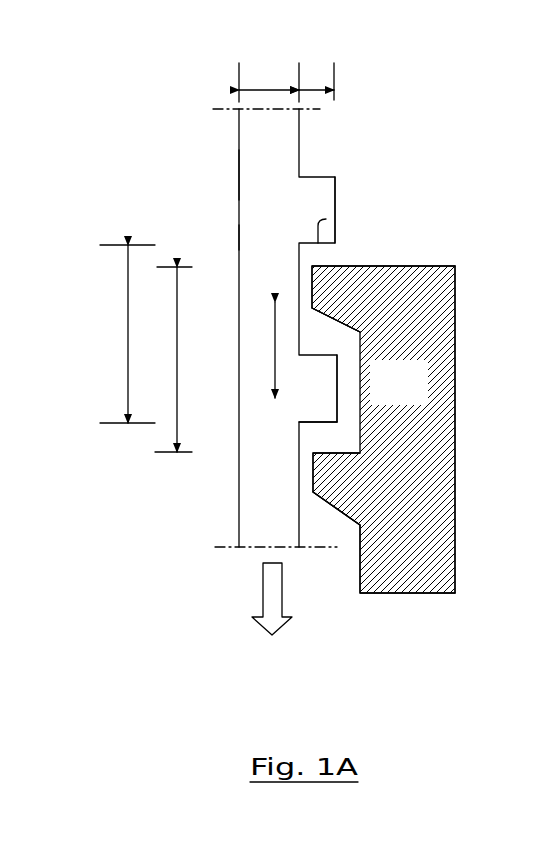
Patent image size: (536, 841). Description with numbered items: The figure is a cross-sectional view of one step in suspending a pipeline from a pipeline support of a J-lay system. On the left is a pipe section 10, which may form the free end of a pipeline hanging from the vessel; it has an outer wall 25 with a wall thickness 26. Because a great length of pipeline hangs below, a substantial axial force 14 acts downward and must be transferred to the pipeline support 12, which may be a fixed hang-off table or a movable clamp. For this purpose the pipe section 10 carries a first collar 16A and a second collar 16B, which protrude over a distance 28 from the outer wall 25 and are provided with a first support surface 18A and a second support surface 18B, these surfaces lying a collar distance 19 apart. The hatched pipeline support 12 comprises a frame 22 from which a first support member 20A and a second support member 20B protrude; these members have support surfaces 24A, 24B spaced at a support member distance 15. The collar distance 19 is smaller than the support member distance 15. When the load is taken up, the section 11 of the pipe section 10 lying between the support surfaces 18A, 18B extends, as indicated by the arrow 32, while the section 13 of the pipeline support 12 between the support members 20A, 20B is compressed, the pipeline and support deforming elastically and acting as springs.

The pipe section 10 is at (245, 195).
The section of pipeline 11 is at (246, 236).
The pipeline support 12 is at (452, 360).
The section of the pipeline support 13 is at (413, 399).
The axial force 14 is at (263, 597).
The support member distance 15 is at (177, 328).
The first collar 16A is at (312, 193).
The second collar 16B is at (299, 444).
The first support surface 18A is at (326, 219).
The second support surface 18B is at (300, 396).
The collar distance 19 is at (128, 325).
The first support member 20A is at (364, 268).
The second support member 20B is at (352, 472).
The frame 22 is at (455, 410).
The first support surface of the support member 24A is at (319, 265).
The second support surface of the support member 24B is at (330, 458).
The outer wall 25 is at (252, 173).
The wall thickness 26 is at (266, 84).
The protrusion distance 28 is at (316, 84).
The extension arrow 32 is at (275, 345).